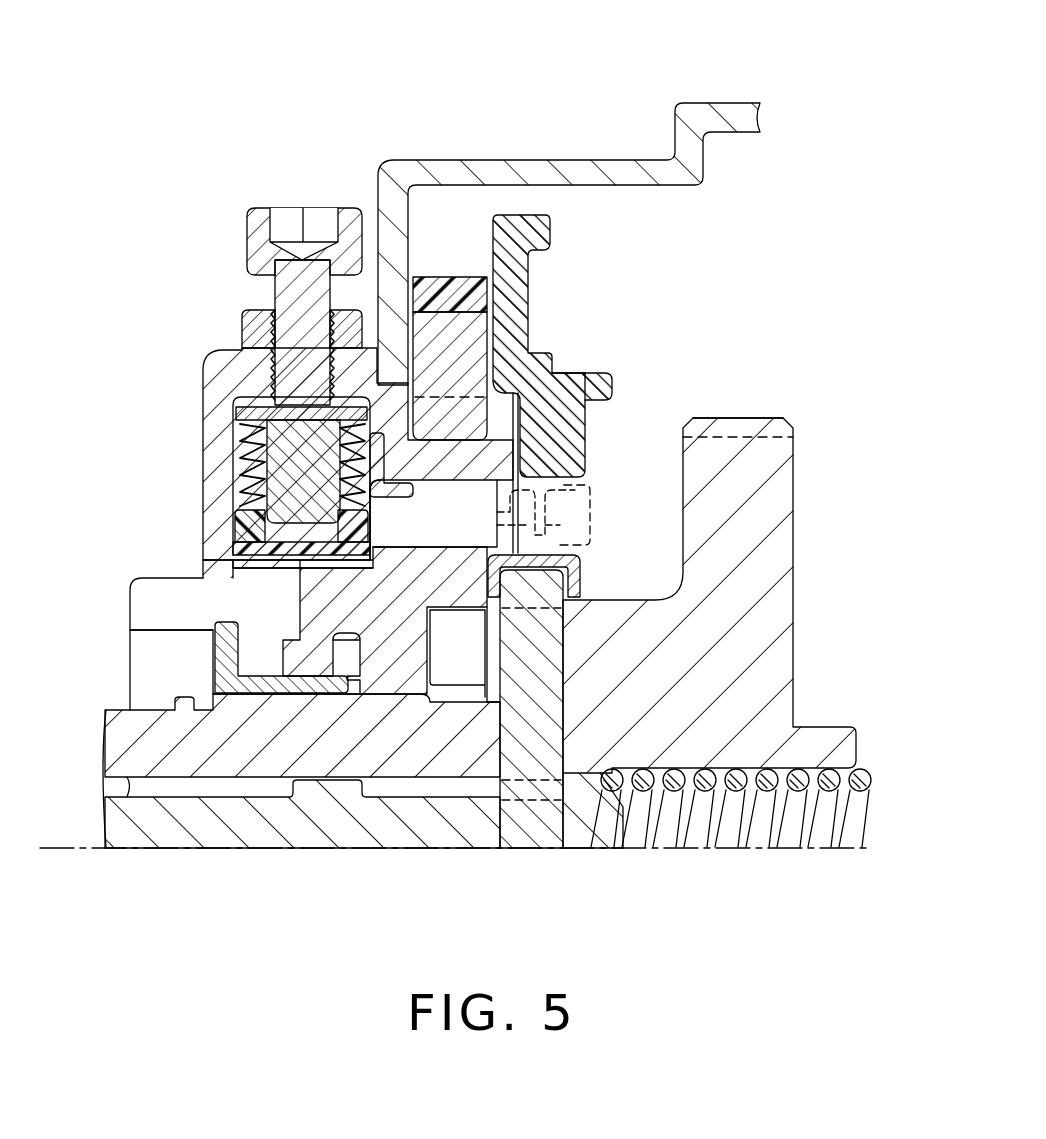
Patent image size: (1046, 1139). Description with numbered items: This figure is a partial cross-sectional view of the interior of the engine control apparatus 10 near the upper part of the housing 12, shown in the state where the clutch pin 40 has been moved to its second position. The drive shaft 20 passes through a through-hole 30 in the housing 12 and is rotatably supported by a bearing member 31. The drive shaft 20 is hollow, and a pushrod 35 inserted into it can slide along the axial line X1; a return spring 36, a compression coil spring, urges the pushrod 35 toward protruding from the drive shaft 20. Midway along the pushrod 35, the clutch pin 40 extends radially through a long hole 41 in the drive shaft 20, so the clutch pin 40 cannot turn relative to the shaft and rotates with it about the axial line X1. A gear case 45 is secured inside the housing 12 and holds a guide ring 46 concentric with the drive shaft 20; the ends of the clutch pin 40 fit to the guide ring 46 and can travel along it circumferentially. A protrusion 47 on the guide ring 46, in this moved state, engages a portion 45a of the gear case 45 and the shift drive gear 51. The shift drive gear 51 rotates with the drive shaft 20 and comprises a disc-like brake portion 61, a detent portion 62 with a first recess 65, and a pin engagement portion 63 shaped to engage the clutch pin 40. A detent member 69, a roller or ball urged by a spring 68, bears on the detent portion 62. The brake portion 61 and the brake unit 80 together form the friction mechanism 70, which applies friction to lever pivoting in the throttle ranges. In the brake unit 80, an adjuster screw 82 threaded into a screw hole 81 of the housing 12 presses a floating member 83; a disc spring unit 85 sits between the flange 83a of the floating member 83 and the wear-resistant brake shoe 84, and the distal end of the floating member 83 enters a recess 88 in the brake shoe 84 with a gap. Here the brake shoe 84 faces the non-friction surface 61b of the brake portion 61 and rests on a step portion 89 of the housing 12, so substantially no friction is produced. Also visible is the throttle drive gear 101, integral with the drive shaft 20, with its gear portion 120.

The engine control apparatus 10 is at (352, 88).
The housing 12 is at (551, 158).
The drive shaft 20 is at (133, 738).
The through-hole 30 is at (127, 782).
The bearing member 31 is at (225, 660).
The pushrod 35 is at (157, 850).
The return spring 36 is at (728, 848).
The clutch pin 40 is at (532, 848).
The long hole 41 is at (500, 618).
The gear case 45 is at (528, 300).
The portion of gear case 45a is at (598, 490).
The guide ring 46 is at (582, 574).
The protrusion 47 is at (575, 500).
The shift drive gear 51 is at (497, 458).
The brake portion 61 is at (335, 597).
The non-friction surface 61b is at (250, 608).
The detent portion 62 is at (575, 388).
The pin engagement portion 63 is at (455, 612).
The first recess 65 is at (510, 395).
The spring 68 is at (430, 277).
The detent member 69 is at (460, 330).
The friction mechanism 70 is at (383, 510).
The brake unit 80 is at (233, 517).
The screw hole 81 is at (282, 380).
The adjuster screw 82 is at (252, 243).
The floating member 83 is at (275, 440).
The flange 83a is at (277, 393).
The brake shoe 84 is at (240, 530).
The disc spring unit 85 is at (245, 470).
The recess 88 is at (300, 550).
The step portion 89 is at (285, 562).
The throttle drive gear 101 is at (748, 480).
The gear portion 120 is at (742, 418).
The axial line X1 is at (70, 850).